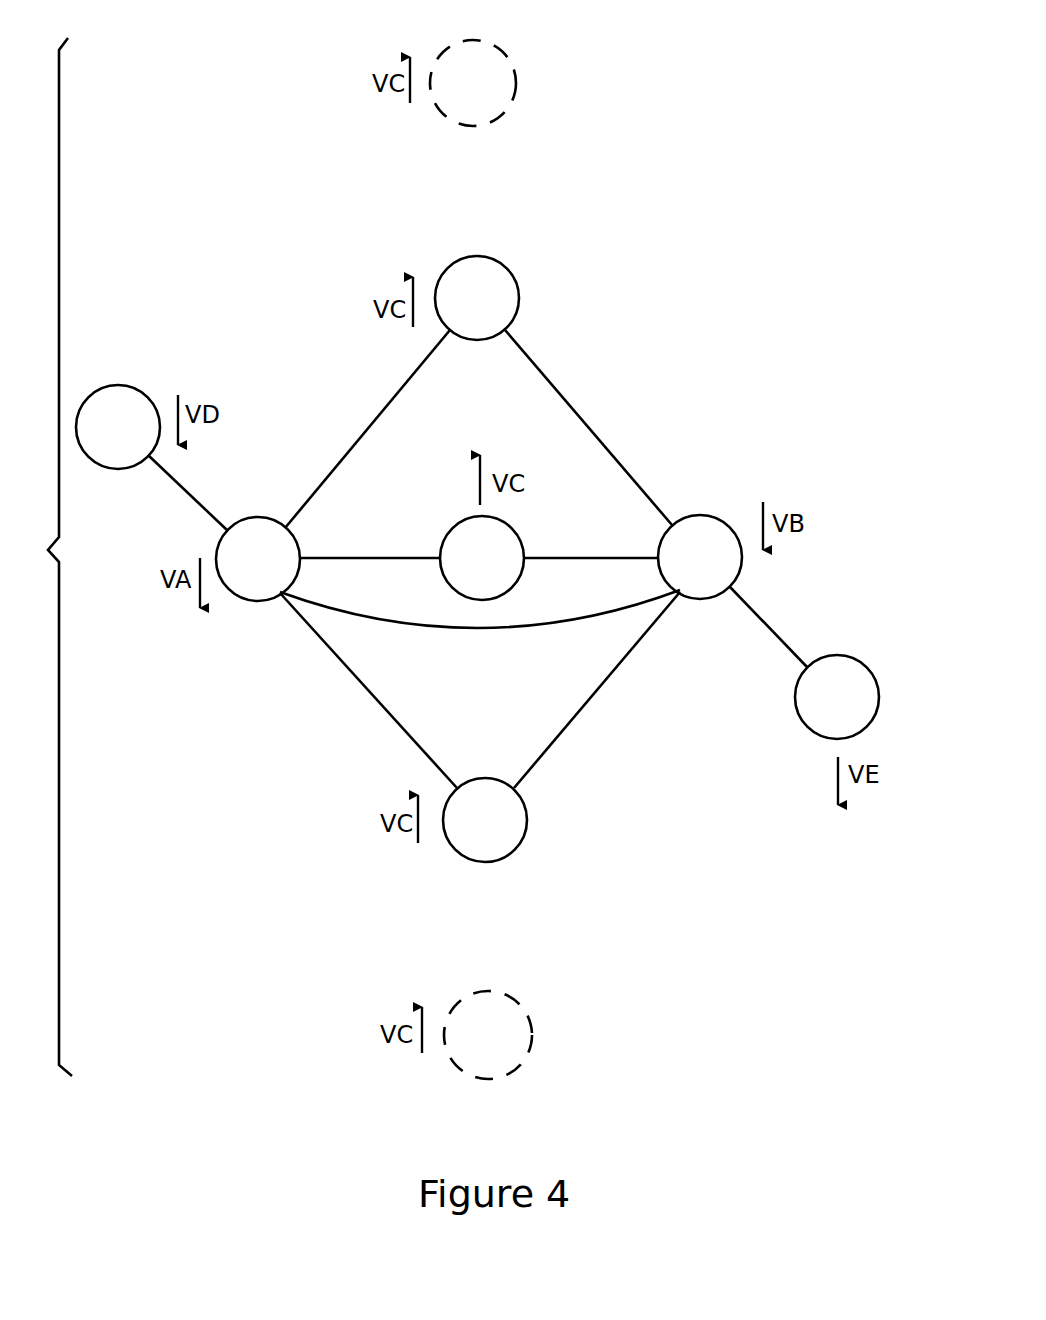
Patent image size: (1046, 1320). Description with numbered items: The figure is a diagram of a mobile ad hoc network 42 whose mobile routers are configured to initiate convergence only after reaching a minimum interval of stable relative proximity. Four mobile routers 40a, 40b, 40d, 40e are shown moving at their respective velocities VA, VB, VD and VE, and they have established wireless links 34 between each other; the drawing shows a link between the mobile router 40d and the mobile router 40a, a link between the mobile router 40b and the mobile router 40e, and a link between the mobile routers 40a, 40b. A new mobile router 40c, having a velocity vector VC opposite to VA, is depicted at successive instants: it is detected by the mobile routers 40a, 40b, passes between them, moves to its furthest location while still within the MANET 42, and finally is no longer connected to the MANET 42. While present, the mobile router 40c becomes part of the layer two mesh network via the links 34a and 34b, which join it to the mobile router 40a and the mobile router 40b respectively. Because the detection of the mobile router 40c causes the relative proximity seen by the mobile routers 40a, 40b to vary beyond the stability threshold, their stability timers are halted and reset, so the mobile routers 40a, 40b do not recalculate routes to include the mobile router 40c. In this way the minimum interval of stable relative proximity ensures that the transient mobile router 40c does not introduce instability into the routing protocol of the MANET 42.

The wireless link 34 is at (192, 497).
The link 34a is at (317, 487).
The link 34b is at (642, 475).
The mobile router 40a is at (252, 601).
The mobile router 40b is at (703, 514).
The mobile router 40c is at (543, 47).
The mobile router 40d is at (110, 387).
The mobile router 40e is at (802, 725).
The mobile ad hoc network 42 is at (243, 842).